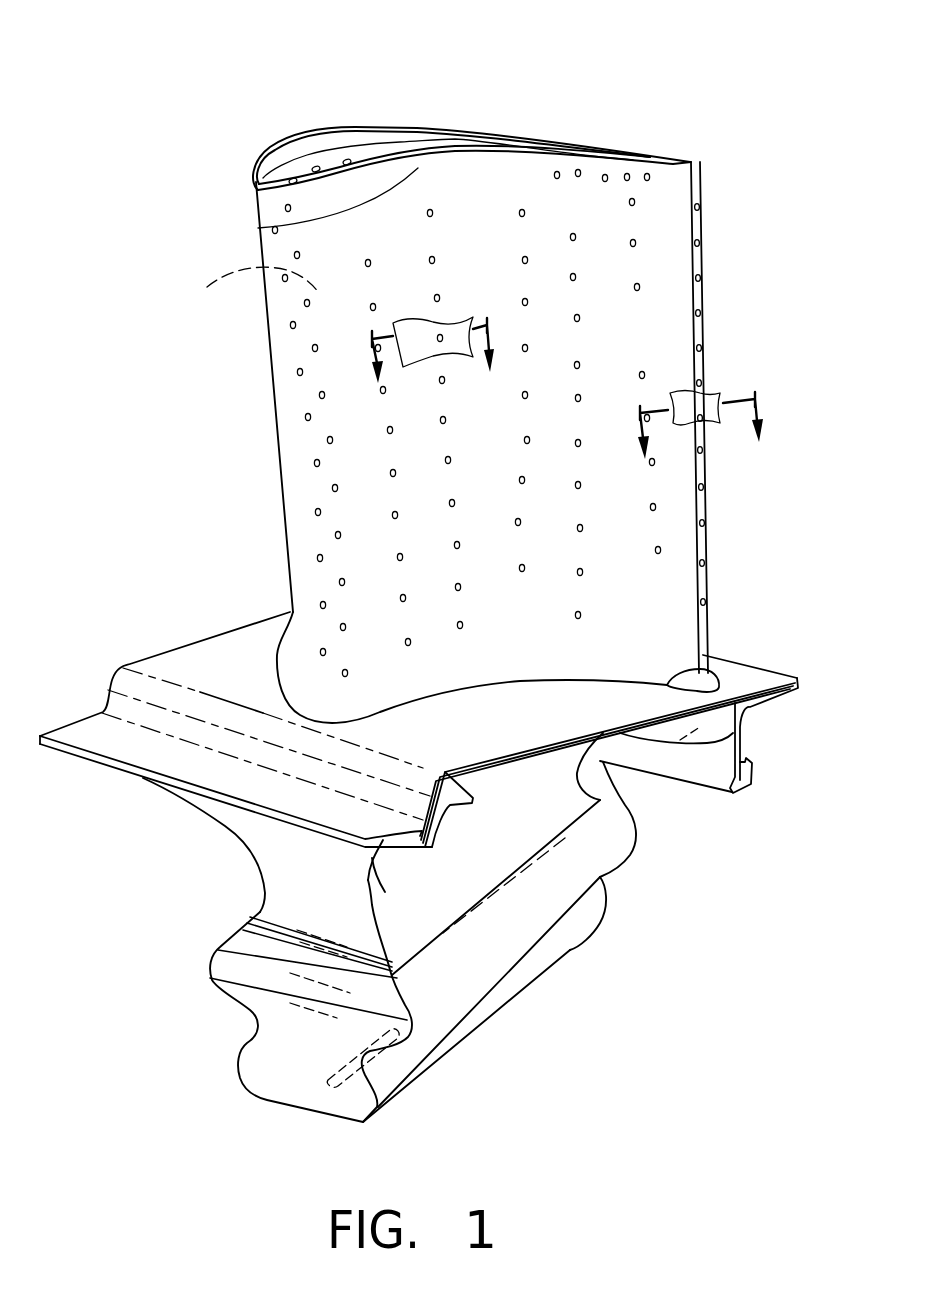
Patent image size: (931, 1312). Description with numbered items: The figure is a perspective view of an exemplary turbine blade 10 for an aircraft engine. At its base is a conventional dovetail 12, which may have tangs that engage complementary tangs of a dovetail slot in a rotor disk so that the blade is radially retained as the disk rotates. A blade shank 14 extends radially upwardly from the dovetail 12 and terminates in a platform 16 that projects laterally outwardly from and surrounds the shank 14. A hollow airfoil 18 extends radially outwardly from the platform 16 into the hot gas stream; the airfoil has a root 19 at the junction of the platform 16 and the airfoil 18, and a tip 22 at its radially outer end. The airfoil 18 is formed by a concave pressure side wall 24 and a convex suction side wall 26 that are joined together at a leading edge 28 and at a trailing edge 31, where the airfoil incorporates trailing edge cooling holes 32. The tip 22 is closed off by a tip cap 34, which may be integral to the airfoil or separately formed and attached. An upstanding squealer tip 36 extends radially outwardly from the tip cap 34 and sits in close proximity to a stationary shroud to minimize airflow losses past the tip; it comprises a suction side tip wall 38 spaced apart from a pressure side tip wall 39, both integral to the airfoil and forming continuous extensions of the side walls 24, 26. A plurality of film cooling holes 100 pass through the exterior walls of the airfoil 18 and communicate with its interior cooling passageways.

The turbine blade 10 is at (552, 88).
The dovetail 12 is at (277, 1010).
The blade shank 14 is at (275, 843).
The platform 16 is at (180, 660).
The hollow airfoil 18 is at (250, 430).
The root 19 is at (668, 683).
The tip 22 is at (262, 228).
The pressure side wall 24 is at (645, 613).
The suction side wall 26 is at (244, 285).
The leading edge 28 is at (293, 345).
The trailing edge 31 is at (705, 182).
The trailing edge cooling holes 32 is at (702, 247).
The tip cap 34 is at (300, 158).
The squealer tip 36 is at (203, 155).
The suction side tip wall 38 is at (357, 160).
The pressure side tip wall 39 is at (428, 134).
The film cooling holes 100 is at (450, 314).